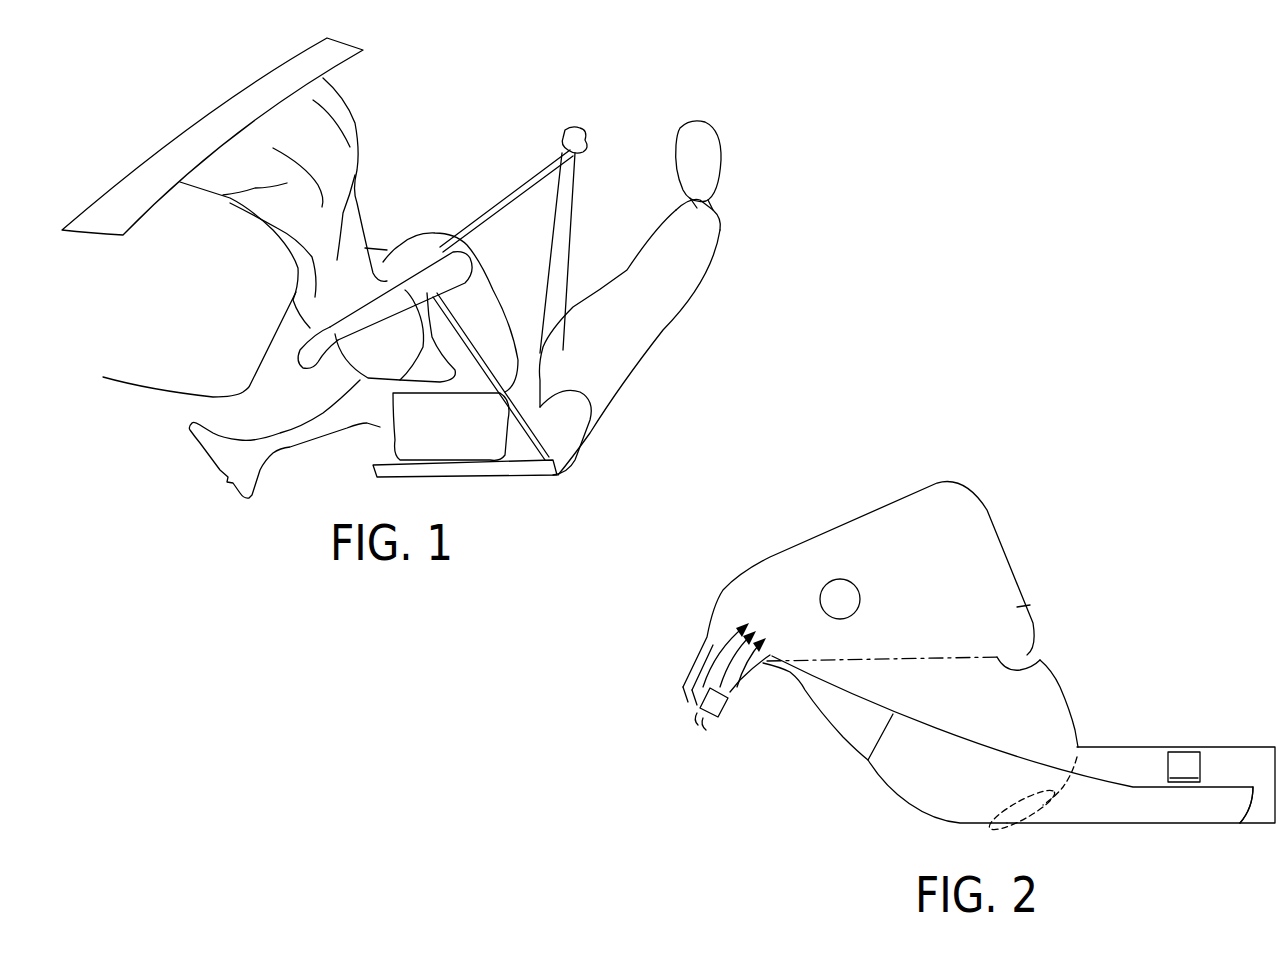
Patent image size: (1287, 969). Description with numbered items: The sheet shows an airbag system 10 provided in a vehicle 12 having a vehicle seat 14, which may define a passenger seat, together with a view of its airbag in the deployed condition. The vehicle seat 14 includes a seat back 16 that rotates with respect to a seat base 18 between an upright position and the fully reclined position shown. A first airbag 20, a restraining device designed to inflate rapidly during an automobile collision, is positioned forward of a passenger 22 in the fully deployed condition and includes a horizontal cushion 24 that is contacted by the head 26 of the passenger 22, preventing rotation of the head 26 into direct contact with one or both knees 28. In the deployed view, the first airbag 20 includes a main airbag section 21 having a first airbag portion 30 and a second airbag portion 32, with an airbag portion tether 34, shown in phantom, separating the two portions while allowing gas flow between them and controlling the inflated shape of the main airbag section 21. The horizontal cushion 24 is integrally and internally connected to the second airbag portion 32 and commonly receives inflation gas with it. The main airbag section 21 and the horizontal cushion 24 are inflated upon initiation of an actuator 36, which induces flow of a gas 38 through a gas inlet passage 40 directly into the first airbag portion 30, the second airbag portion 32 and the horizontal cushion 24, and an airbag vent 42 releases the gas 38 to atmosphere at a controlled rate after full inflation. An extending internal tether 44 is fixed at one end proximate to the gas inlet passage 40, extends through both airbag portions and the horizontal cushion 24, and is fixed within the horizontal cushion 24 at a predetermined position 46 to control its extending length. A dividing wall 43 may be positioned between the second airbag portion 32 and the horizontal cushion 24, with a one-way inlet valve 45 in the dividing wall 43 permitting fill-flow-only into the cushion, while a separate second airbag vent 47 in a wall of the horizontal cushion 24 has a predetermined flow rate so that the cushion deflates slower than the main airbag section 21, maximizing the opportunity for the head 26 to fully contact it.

In FIG. 1, the airbag system 10 is at (410, 88).
In FIG. 1, the vehicle 12 is at (300, 64).
In FIG. 1, the vehicle seat 14 is at (755, 210).
In FIG. 1, the seat back 16 is at (697, 277).
In FIG. 1, the seat base 18 is at (517, 448).
In FIG. 1, the first airbag 20 is at (340, 157).
In FIG. 2, the first airbag 20 is at (1035, 482).
In FIG. 2, the main airbag section 21 is at (1042, 545).
In FIG. 1, the passenger 22 is at (483, 302).
In FIG. 1, the horizontal cushion 24 is at (353, 360).
In FIG. 2, the horizontal cushion 24 is at (1210, 760).
In FIG. 1, the head 26 is at (375, 256).
In FIG. 1, the knees 28 is at (350, 393).
In FIG. 2, the first airbag portion 30 is at (1017, 607).
In FIG. 2, the second airbag portion 32 is at (1060, 717).
In FIG. 2, the airbag portion tether 34 is at (1035, 663).
In FIG. 2, the actuator 36 is at (720, 703).
In FIG. 2, the gas 38 is at (717, 657).
In FIG. 2, the gas inlet passage 40 is at (683, 690).
In FIG. 2, the airbag vent 42 is at (818, 590).
In FIG. 2, the dividing wall 43 is at (1080, 760).
In FIG. 2, the internal tether 44 is at (867, 758).
In FIG. 2, the one-way inlet valve 45 is at (990, 828).
In FIG. 2, the predetermined position 46 is at (1250, 790).
In FIG. 2, the second airbag vent 47 is at (1184, 767).